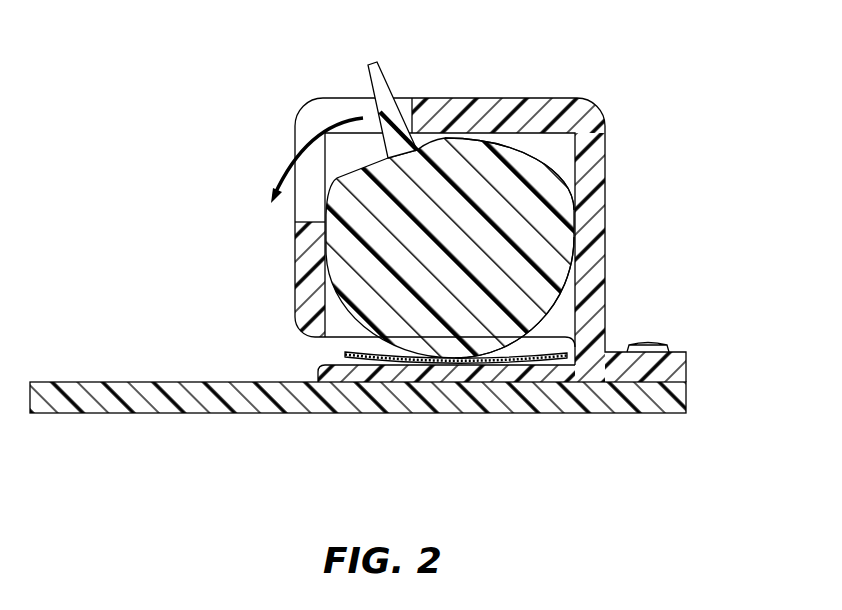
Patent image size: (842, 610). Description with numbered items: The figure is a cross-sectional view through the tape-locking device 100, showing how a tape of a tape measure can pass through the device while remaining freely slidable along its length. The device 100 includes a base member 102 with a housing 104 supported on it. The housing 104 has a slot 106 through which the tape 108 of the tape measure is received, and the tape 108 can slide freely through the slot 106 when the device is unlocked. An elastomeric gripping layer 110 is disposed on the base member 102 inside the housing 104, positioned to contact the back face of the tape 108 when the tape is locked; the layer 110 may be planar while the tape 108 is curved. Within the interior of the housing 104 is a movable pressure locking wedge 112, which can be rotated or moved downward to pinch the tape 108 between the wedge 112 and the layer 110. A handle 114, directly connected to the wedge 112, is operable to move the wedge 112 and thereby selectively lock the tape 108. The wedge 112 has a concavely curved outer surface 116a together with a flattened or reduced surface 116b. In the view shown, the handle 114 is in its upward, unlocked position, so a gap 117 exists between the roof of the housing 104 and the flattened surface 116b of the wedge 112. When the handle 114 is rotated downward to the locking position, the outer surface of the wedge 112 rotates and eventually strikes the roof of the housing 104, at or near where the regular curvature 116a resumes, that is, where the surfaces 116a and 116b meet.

The device 100 is at (422, 256).
The base member 102 is at (662, 407).
The housing 104 is at (447, 115).
The slot 106 is at (418, 194).
The tape 108 is at (348, 353).
The elastomeric gripping layer 110 is at (515, 373).
The movable pressure locking wedge 112 is at (533, 213).
The handle 114 is at (370, 93).
The concavely curved outer surface 116a is at (603, 297).
The flattened surface 116b is at (510, 150).
The gap 117 is at (540, 155).